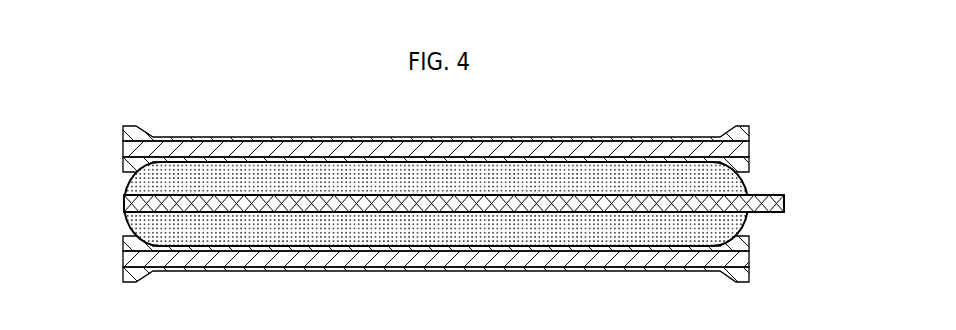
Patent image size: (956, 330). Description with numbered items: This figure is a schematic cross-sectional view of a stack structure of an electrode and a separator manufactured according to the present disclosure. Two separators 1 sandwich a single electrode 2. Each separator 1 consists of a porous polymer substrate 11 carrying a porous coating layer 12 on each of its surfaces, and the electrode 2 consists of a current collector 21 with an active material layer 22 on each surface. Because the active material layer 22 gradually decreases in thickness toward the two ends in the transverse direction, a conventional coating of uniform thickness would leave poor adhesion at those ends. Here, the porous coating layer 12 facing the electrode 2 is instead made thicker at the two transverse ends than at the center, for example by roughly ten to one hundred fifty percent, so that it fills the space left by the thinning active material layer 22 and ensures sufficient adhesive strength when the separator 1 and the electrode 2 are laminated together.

The separator 1 is at (477, 204).
The porous polymer substrate 11 is at (750, 147).
The porous coating layer 12 is at (750, 137).
The electrode 2 is at (410, 203).
The current collector 21 is at (127, 207).
The active material layer 22 is at (131, 189).